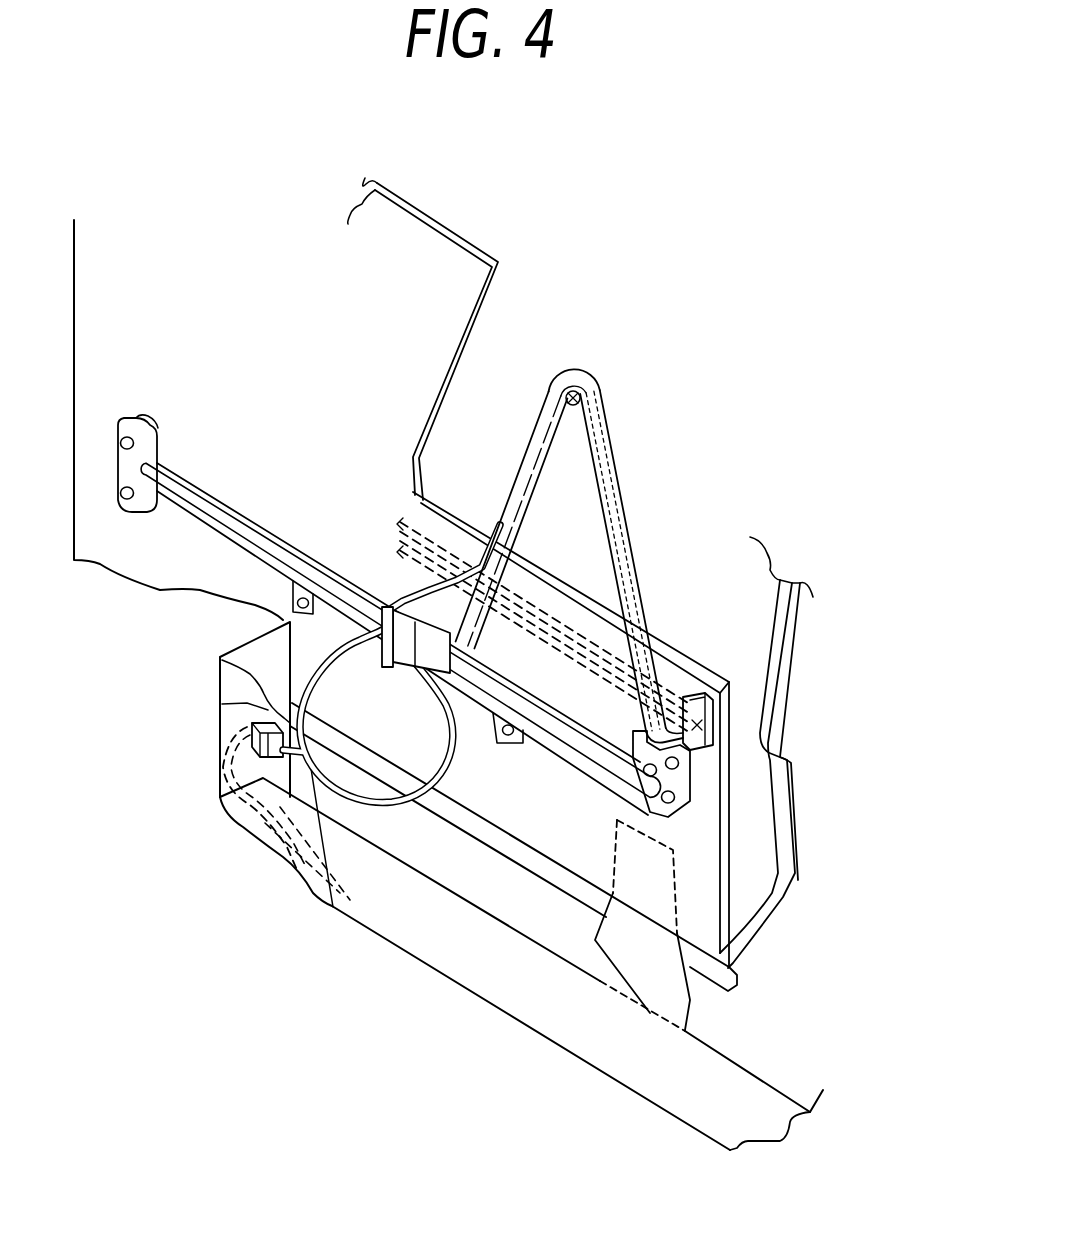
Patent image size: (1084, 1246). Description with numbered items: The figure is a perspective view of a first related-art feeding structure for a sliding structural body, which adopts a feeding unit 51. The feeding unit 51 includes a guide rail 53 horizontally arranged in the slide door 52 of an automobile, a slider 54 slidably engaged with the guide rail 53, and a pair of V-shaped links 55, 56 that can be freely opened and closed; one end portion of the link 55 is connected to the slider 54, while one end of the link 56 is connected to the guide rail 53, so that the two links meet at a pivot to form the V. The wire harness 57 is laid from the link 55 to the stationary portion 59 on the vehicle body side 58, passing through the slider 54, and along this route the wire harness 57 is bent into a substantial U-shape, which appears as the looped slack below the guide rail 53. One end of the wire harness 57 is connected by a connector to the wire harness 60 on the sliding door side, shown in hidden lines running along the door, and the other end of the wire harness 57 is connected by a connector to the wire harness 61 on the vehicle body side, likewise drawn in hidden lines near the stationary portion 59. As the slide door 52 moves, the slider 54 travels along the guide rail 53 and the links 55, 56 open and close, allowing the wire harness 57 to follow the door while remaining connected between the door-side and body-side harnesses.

The feeding unit 51 is at (538, 795).
The slide door 52 is at (786, 683).
The guide rail 53 is at (288, 547).
The slider 54 is at (408, 653).
The link 55 is at (523, 459).
The link 56 is at (618, 475).
The wire harness 57 is at (453, 754).
The vehicle body side 58 is at (752, 1067).
The stationary portion 59 is at (222, 705).
The wire harness on the sliding door side 60 is at (547, 618).
The wire harness on the vehicle body side 61 is at (257, 832).